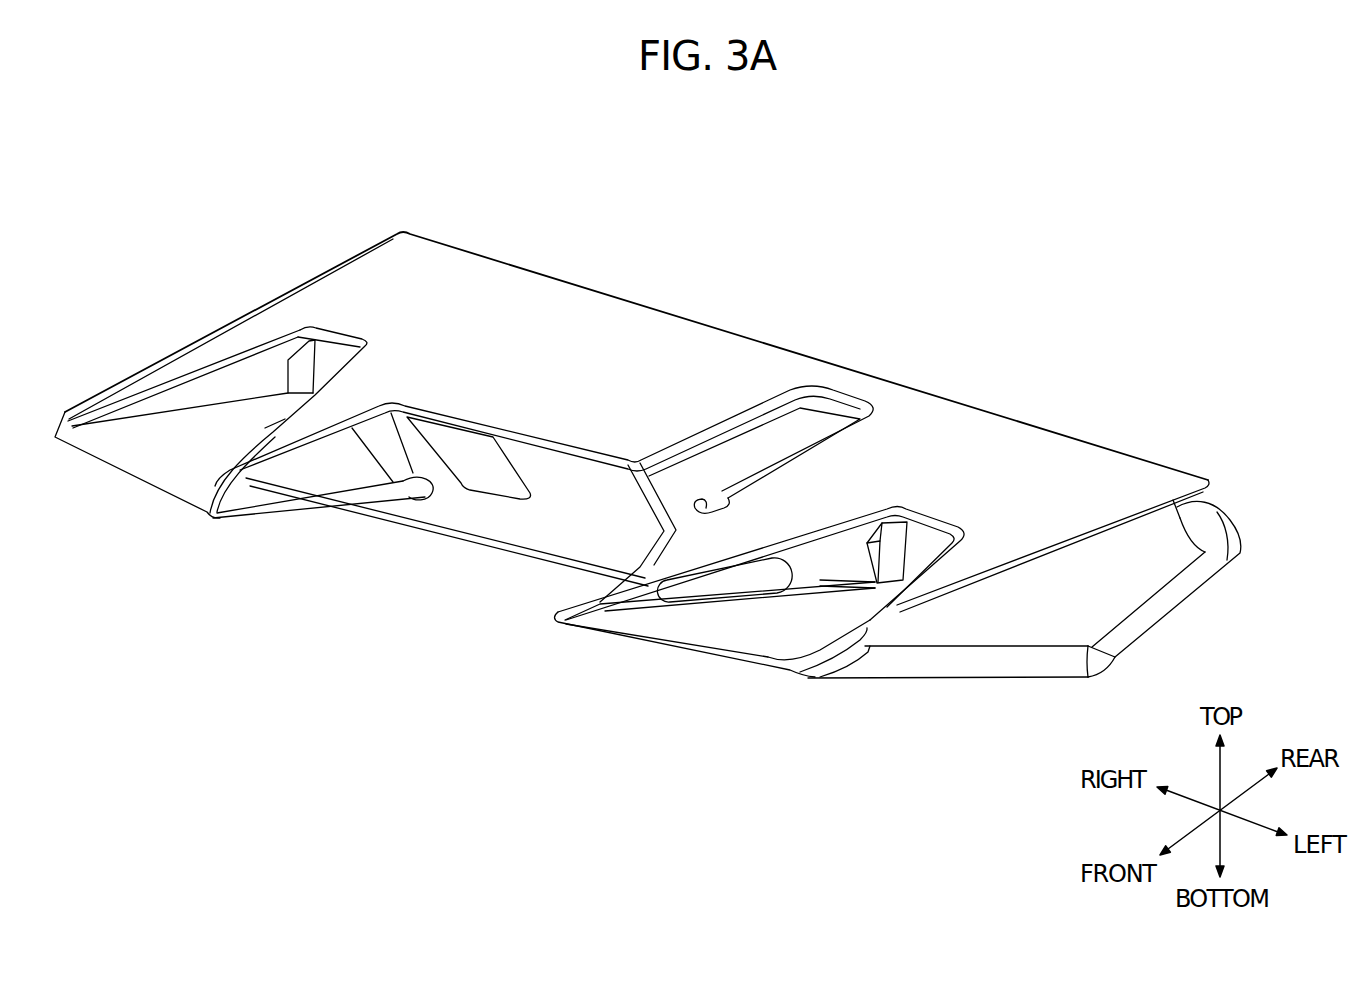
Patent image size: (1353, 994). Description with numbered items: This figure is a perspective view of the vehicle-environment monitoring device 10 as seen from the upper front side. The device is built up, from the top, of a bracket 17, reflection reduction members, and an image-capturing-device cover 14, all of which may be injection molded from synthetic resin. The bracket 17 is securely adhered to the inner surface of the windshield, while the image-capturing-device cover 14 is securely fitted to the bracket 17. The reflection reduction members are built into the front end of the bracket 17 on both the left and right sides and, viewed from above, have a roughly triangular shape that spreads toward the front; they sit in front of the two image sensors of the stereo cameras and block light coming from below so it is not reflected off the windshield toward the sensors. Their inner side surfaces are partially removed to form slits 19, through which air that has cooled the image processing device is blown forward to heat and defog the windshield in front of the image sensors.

The vehicle-environment monitoring device 10 is at (632, 190).
The image-capturing-device cover 14 is at (1187, 602).
The bracket 17 is at (484, 292).
The slits 19 is at (740, 580).